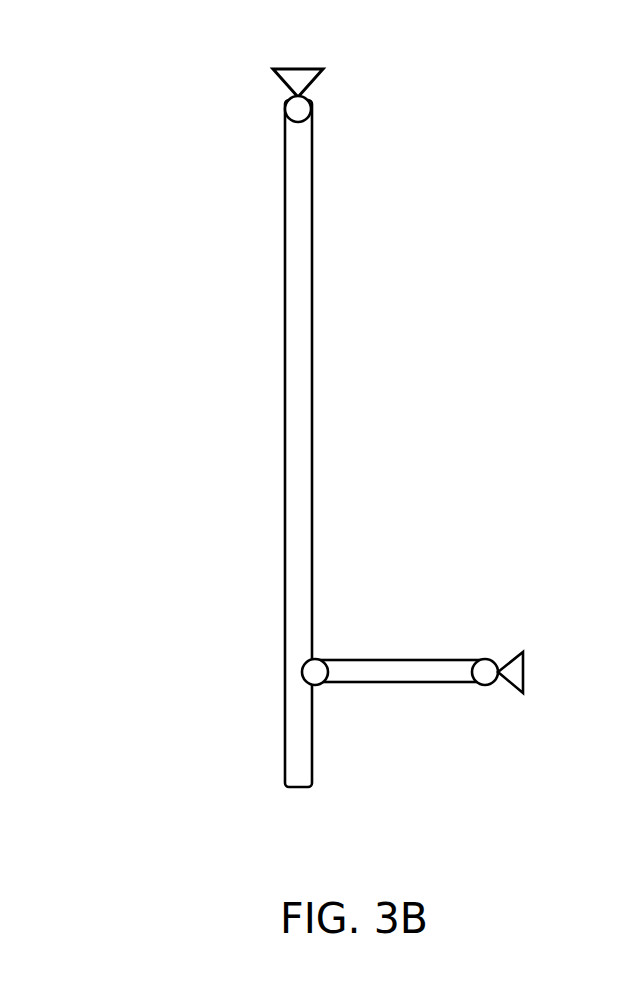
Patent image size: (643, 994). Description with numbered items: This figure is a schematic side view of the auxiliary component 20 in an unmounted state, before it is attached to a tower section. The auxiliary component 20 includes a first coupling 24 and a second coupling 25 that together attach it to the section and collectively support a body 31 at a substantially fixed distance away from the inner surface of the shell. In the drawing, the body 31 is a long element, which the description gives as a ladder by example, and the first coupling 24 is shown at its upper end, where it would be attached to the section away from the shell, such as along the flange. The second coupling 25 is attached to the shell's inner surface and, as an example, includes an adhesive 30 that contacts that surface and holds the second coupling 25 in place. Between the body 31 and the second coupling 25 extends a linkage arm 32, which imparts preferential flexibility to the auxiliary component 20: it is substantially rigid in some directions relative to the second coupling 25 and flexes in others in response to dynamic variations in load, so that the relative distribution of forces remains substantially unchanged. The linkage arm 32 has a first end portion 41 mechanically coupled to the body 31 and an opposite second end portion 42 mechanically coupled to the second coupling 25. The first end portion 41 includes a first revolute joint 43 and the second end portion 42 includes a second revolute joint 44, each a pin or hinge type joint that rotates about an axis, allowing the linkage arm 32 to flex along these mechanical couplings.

The auxiliary component 20 is at (244, 48).
The first coupling 24 is at (323, 73).
The second coupling 25 is at (510, 690).
The adhesive 30 is at (528, 652).
The body 31 is at (312, 358).
The linkage arm 32 is at (392, 656).
The first end portion 41 is at (332, 659).
The second end portion 42 is at (464, 659).
The first revolute joint 43 is at (318, 685).
The second revolute joint 44 is at (482, 687).